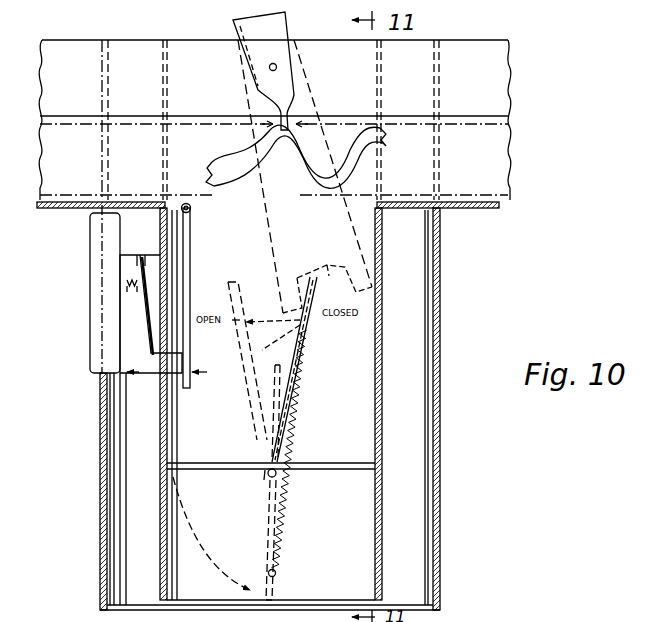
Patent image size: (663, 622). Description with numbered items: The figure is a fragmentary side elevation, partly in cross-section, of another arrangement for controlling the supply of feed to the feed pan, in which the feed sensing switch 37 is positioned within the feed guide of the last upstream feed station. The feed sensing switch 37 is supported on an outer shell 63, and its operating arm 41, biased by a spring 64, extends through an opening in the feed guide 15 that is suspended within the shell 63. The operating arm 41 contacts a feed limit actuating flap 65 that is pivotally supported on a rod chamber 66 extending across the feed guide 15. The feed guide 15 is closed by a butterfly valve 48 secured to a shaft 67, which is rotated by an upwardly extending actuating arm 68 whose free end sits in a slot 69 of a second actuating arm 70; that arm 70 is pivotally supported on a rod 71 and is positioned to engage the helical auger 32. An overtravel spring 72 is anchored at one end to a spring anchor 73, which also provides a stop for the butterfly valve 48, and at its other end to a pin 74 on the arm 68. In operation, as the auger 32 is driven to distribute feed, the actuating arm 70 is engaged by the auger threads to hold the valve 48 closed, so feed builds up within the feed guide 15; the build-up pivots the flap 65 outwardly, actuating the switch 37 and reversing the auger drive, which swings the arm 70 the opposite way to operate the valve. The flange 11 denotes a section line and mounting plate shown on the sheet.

The flange plate / section line 11 is at (466, 208).
The feed guide 15 is at (383, 278).
The helical auger 32 is at (195, 120).
The feed sensing switch 37 is at (90, 322).
The operating arm 41 is at (150, 376).
The butterfly valve 48 is at (212, 470).
The outer shell 63 is at (100, 477).
The spring 64 is at (126, 290).
The feed limit actuating flap 65 is at (191, 262).
The rod chamber 66 is at (191, 210).
The shaft 67 is at (268, 478).
The actuating arm 68 is at (310, 330).
The slot 69 is at (327, 289).
The actuating arm 70 is at (283, 34).
The rod 71 is at (276, 69).
The overtravel spring 72 is at (292, 500).
The spring anchor 73 is at (276, 571).
The pin 74 is at (273, 340).